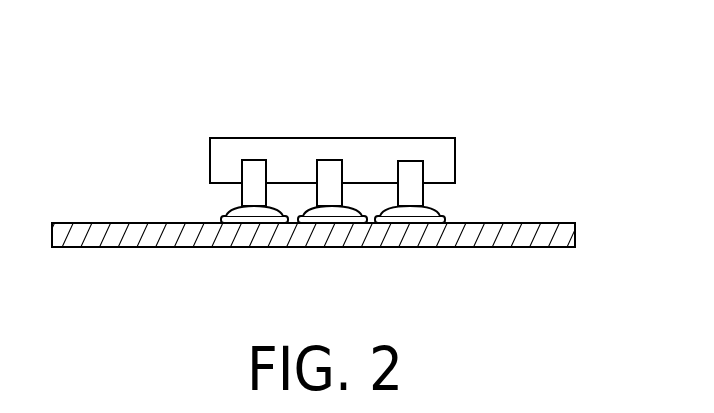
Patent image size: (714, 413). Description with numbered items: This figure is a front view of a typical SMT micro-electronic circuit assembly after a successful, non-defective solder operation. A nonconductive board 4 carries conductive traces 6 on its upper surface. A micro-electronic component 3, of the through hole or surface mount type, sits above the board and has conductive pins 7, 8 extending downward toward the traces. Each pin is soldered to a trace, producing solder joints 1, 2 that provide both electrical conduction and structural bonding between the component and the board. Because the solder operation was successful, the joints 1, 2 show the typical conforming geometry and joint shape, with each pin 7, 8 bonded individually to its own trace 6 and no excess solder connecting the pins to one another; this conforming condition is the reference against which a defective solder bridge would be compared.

The solder joint 1 is at (232, 206).
The solder joint 2 is at (352, 207).
The micro-electronic component 3 is at (427, 138).
The nonconductive board 4 is at (283, 223).
The conductive traces 6 is at (445, 217).
The conductive pin 7 is at (255, 160).
The conductive pin 8 is at (330, 160).